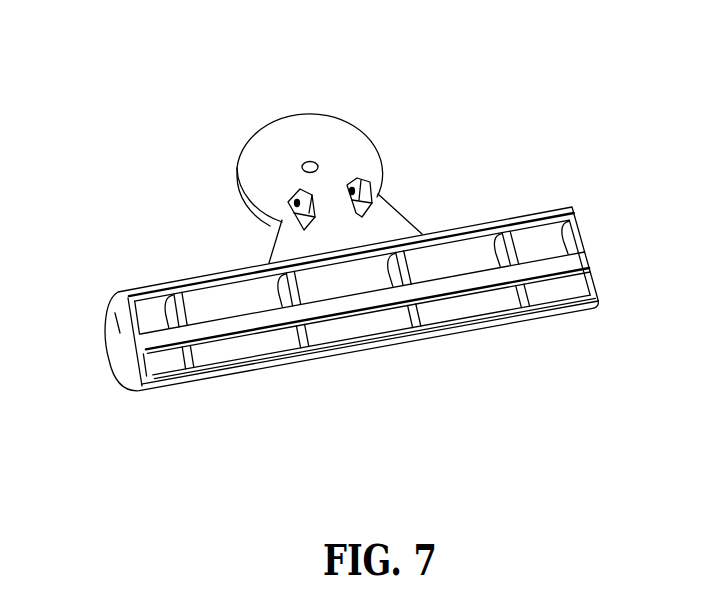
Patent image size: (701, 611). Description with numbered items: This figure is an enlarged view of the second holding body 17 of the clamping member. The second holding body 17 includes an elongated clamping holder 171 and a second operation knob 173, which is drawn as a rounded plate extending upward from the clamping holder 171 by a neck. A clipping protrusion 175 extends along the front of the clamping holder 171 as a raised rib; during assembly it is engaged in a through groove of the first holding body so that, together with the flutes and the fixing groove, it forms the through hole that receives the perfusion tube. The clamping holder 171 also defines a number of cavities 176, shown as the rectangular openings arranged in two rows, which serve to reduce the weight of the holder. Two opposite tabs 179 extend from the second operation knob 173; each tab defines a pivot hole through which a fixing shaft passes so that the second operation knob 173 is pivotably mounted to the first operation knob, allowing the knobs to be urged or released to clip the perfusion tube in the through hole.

The second holding body 17 is at (182, 146).
The clamping holder 171 is at (117, 294).
The second operation knob 173 is at (307, 127).
The clipping protrusion 175 is at (215, 330).
The cavities 176 is at (480, 250).
The hook tabs 179 is at (363, 178).